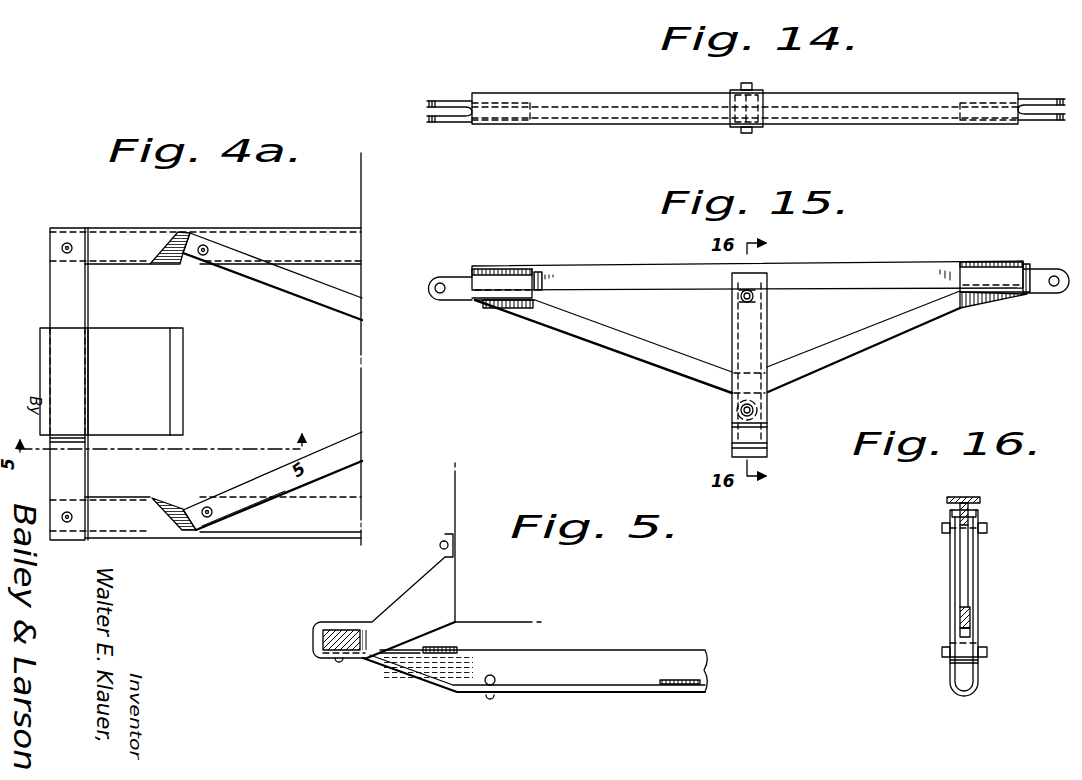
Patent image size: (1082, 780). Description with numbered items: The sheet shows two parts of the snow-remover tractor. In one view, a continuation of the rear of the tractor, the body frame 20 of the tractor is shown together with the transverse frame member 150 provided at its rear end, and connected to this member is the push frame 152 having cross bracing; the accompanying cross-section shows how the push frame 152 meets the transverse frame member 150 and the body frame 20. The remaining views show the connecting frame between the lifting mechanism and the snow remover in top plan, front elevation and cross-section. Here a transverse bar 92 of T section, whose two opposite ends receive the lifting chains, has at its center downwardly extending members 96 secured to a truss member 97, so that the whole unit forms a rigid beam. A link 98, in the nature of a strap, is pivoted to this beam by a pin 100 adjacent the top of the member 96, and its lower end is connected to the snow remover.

In FIG. 5, the body frame 20 is at (485, 595).
In FIG. 14, the transverse bar 92 is at (615, 118).
In FIG. 15, the transverse bar 92 is at (587, 278).
In FIG. 16, the transverse bar 92 is at (968, 497).
In FIG. 15, the downwardly extending member 96 is at (767, 337).
In FIG. 16, the downwardly extending member 96 is at (957, 566).
In FIG. 15, the truss member 97 is at (832, 357).
In FIG. 16, the truss member 97 is at (968, 618).
In FIG. 15, the link 98 is at (762, 400).
In FIG. 16, the link 98 is at (978, 633).
In FIG. 14, the pin 100 is at (746, 134).
In FIG. 15, the pin 100 is at (750, 290).
In FIG. 16, the pin 100 is at (987, 528).
In FIG. 4A, the transverse frame member 150 is at (80, 295).
In FIG. 5, the transverse frame member 150 is at (322, 644).
In FIG. 4A, the push frame 152 is at (147, 500).
In FIG. 5, the push frame 152 is at (563, 670).